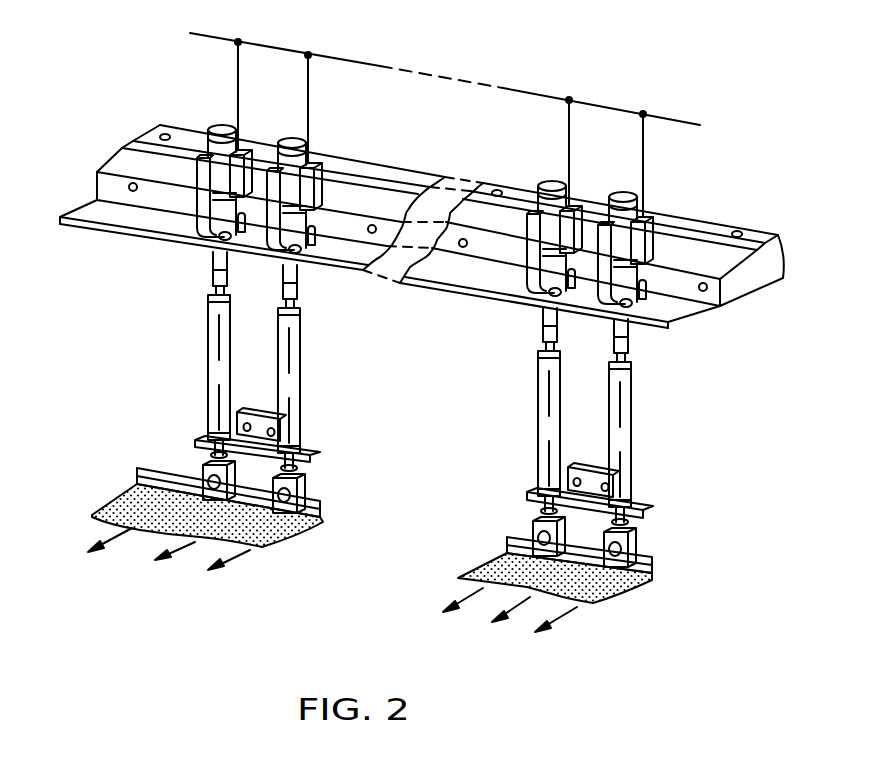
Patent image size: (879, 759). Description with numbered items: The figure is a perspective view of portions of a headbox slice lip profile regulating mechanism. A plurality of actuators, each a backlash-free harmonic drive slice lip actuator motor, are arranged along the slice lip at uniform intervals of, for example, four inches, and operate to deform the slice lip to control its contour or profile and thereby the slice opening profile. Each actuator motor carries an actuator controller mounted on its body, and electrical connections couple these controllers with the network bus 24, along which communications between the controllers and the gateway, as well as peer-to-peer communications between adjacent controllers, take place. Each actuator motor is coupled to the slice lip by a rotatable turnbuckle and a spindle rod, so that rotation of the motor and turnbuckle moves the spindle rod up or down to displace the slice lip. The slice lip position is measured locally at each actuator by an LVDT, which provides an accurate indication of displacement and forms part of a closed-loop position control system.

The network bus 24 is at (541, 95).